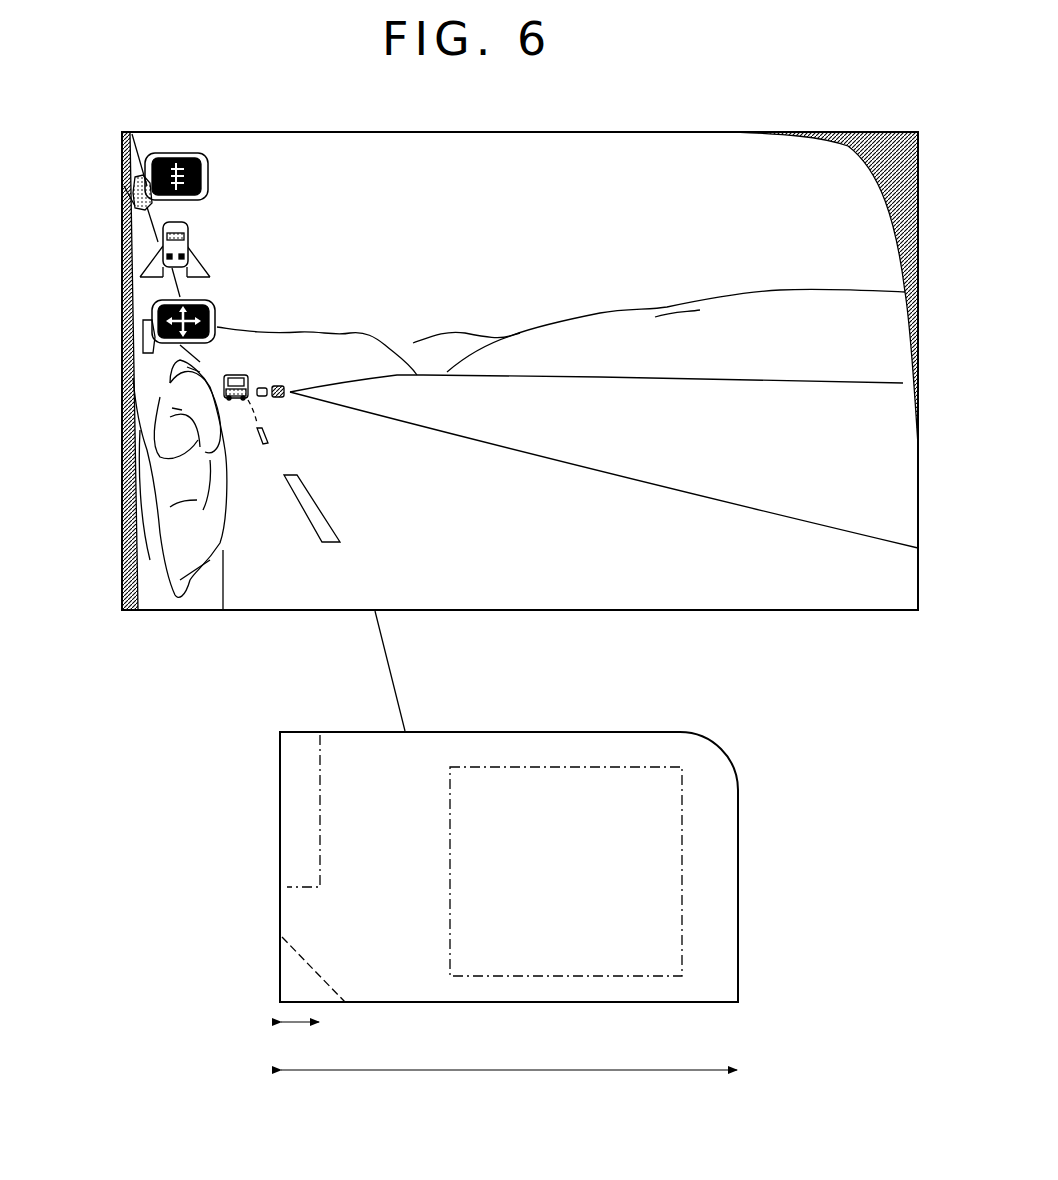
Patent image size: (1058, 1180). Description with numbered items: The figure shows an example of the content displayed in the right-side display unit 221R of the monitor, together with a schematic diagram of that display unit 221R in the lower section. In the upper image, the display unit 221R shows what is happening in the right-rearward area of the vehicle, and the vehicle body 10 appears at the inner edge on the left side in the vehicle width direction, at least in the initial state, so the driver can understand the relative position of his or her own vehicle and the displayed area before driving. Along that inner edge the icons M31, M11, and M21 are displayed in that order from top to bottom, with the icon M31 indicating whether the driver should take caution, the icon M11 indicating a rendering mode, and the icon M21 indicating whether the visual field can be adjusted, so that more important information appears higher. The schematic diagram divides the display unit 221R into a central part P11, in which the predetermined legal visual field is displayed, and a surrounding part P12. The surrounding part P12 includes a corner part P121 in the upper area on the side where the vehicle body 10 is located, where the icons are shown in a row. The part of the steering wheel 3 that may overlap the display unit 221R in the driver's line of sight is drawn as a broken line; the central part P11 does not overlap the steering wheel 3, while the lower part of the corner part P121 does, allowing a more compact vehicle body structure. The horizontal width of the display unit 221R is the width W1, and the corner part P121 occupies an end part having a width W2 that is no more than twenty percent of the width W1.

The display unit 221R is at (786, 873).
The icon M31 is at (124, 200).
The icon M11 is at (158, 253).
The icon M21 is at (143, 322).
The vehicle body 10 is at (163, 584).
The corner part P121 is at (294, 775).
The surrounding part P12 is at (392, 808).
The central part P11 is at (599, 767).
The steering wheel 3 is at (303, 958).
The width W2 is at (300, 1041).
The width W1 is at (509, 1087).